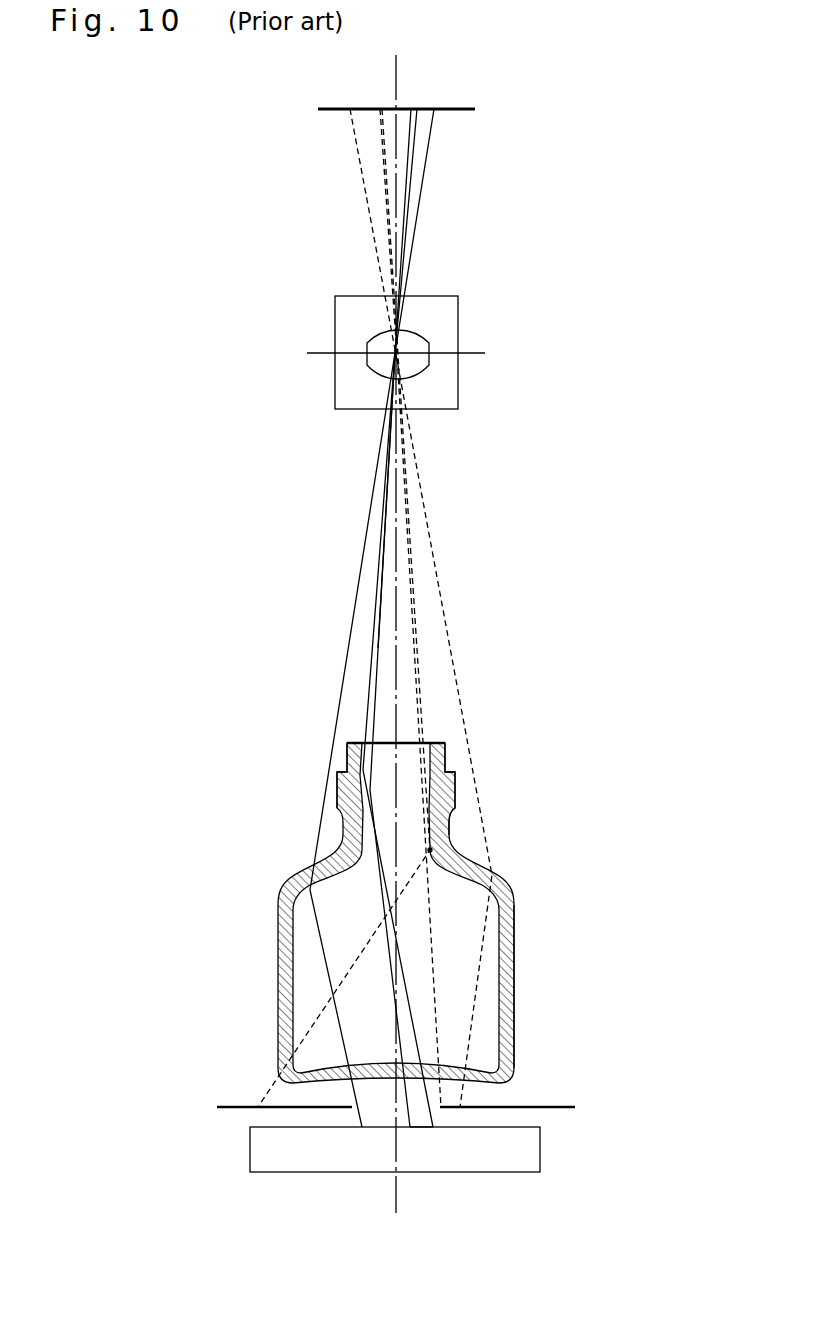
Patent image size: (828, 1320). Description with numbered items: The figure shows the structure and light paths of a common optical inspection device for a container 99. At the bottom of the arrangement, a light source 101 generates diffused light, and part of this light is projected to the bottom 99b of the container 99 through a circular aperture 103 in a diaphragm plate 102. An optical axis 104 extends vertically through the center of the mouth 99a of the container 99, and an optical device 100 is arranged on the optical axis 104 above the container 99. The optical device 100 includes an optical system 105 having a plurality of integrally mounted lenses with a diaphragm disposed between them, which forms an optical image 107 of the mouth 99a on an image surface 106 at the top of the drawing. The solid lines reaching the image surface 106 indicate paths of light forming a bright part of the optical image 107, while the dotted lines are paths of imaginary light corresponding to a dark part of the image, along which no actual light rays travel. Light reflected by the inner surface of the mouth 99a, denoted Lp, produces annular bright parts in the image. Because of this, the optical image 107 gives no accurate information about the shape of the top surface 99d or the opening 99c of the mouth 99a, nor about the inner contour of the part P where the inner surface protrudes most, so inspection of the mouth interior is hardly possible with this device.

The optical device 100 is at (587, 158).
The light source 101 is at (262, 1147).
The diaphragm plate 102 is at (250, 1105).
The circular aperture 103 is at (440, 1120).
The optical axis 104 is at (398, 690).
The optical system 105 is at (458, 309).
The image surface 106 is at (475, 110).
The optical image 107 is at (340, 114).
The container 99 is at (518, 932).
The mouth 99a is at (458, 783).
The bottom 99b is at (455, 1040).
The opening 99c is at (388, 740).
The top surface 99d is at (353, 742).
The light reflected by the inner surface of the mouth Lp is at (378, 648).
The part where the inner surface protrudes most P is at (430, 849).